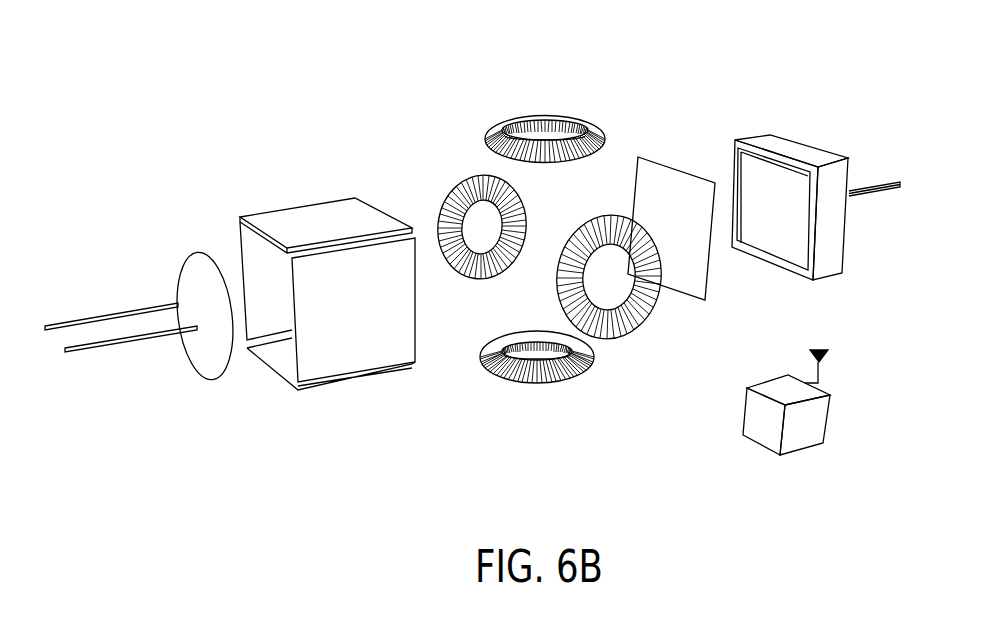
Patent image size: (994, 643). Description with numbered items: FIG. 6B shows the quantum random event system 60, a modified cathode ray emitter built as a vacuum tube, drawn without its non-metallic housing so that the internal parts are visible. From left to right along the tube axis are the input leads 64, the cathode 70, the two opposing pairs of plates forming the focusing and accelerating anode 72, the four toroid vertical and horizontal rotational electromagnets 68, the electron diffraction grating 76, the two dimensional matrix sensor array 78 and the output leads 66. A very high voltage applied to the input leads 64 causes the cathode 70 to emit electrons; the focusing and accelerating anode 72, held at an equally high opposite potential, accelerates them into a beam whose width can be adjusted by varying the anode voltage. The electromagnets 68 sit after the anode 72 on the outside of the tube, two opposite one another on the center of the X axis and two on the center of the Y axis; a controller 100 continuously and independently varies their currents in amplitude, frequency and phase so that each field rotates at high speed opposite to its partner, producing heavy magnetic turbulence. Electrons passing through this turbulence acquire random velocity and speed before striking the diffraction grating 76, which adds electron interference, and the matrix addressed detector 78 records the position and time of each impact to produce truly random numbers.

The quantum random event system 60 is at (252, 111).
The input leads 64 is at (116, 293).
The output leads 66 is at (875, 157).
The vertical and horizontal rotational electromagnets 68 is at (452, 195).
The cathode 70 is at (193, 252).
The focusing and accelerating anode 72 is at (313, 185).
The electron diffraction grating 76 is at (672, 147).
The two dimensional matrix sensor array 78 is at (795, 121).
The controller 100 is at (813, 422).